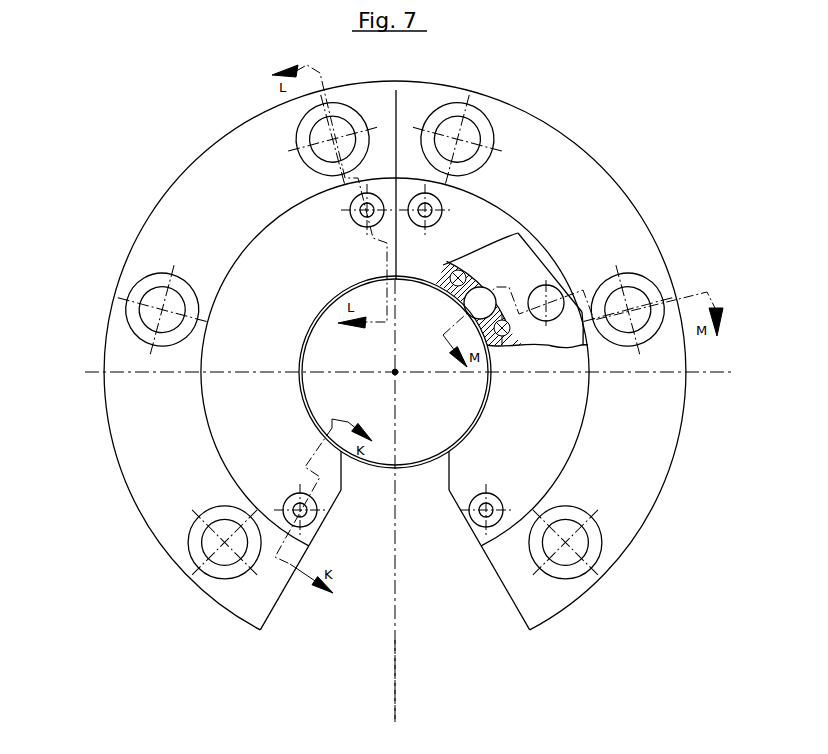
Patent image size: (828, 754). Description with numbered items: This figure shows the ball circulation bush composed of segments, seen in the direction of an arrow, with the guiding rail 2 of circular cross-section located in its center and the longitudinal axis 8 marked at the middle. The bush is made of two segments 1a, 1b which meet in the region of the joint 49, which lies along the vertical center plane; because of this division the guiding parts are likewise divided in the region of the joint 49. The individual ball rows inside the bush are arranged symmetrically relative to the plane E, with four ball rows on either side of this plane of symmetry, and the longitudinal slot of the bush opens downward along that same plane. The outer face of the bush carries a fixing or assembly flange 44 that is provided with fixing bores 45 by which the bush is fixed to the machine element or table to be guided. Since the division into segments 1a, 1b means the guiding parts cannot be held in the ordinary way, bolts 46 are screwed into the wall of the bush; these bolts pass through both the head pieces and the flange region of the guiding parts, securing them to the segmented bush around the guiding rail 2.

The segment 1a is at (208, 186).
The segment 1b is at (592, 186).
The guiding rail 2 is at (472, 448).
The longitudinal axis 8 is at (395, 373).
The fixing or assembly flange 44 is at (136, 465).
The fixing bores 45 is at (200, 562).
The bolts 46 is at (402, 399).
The joint 49 is at (396, 90).
The plane E is at (393, 704).